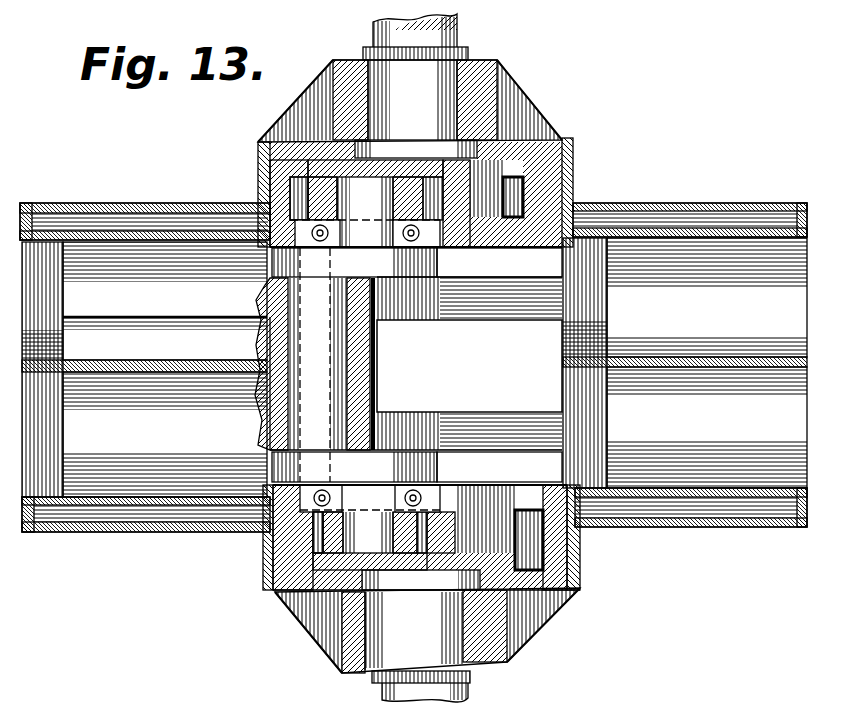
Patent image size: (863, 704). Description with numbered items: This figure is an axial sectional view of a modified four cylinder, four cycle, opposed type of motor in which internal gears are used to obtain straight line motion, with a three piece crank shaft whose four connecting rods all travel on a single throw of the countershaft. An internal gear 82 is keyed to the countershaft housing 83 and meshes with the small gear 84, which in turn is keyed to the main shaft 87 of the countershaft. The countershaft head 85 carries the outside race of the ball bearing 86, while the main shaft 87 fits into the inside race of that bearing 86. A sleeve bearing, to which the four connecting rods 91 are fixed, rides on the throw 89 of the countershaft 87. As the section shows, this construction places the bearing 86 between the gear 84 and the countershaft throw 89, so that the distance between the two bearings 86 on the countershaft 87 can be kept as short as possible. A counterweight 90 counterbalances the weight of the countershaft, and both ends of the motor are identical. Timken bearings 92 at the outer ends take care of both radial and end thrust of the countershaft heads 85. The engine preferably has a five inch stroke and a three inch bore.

The internal gear 82 is at (262, 165).
The countershaft housing 83 is at (567, 137).
The small gear 84 is at (505, 128).
The countershaft head 85 is at (310, 172).
The ball bearing 86 is at (438, 248).
The main shaft of the countershaft 87 is at (335, 597).
The throw of the countershaft 89 is at (317, 380).
The counterweight 90 is at (525, 168).
The connecting rods 91 is at (163, 294).
The Timken bearings 92 is at (500, 72).